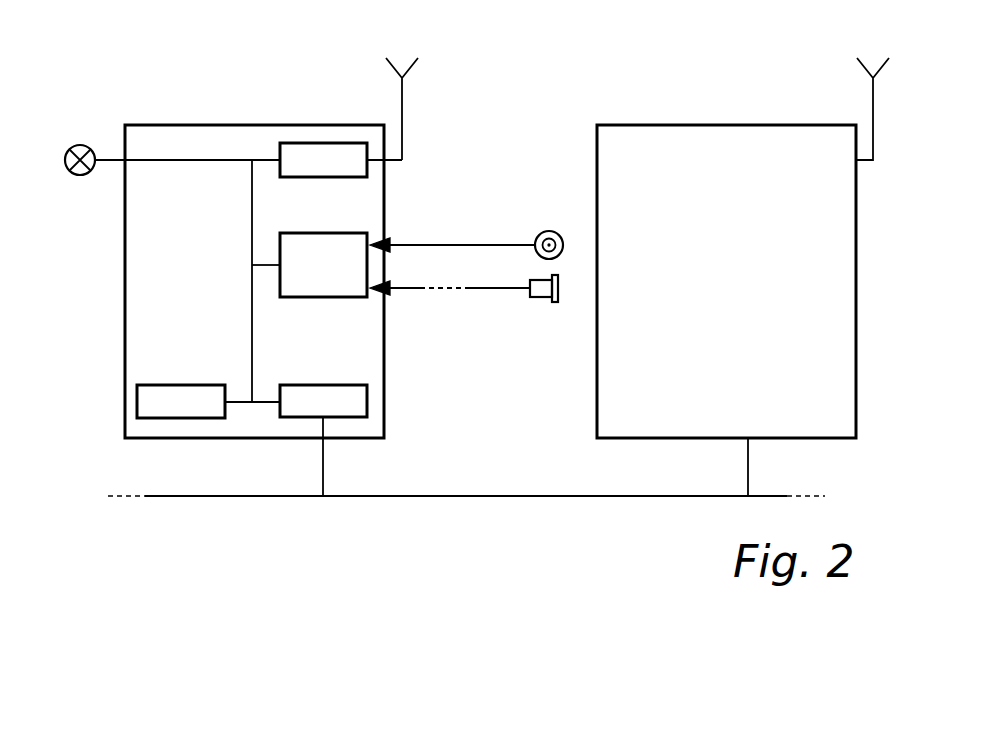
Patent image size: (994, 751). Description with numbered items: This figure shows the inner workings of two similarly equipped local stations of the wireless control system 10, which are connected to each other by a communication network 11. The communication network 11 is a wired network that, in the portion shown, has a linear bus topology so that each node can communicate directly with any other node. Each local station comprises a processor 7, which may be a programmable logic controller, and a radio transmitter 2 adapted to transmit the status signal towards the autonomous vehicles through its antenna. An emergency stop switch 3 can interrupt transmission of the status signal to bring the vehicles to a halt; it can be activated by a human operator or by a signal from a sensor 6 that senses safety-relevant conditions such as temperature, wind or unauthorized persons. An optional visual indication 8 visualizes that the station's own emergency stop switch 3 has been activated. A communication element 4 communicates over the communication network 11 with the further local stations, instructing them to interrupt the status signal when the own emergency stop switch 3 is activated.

The wireless control system 10 is at (118, 86).
The radio transmitter 2 is at (300, 143).
The emergency stop switch 3 is at (367, 233).
The communication element 4 is at (333, 385).
The sensor 6 is at (552, 302).
The processor 7 is at (175, 385).
The visual indication 8 is at (81, 176).
The communication network 11 is at (228, 497).